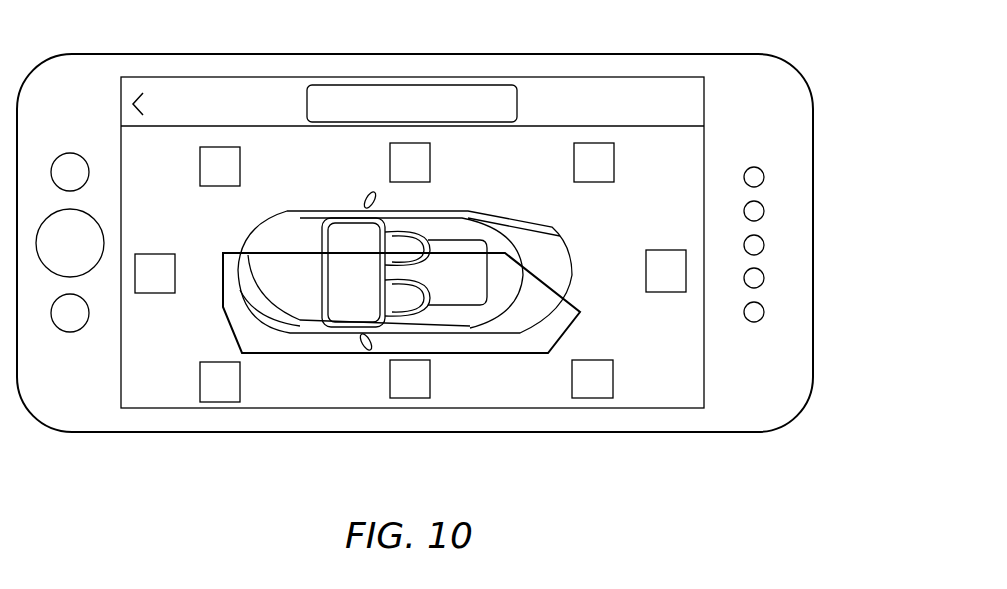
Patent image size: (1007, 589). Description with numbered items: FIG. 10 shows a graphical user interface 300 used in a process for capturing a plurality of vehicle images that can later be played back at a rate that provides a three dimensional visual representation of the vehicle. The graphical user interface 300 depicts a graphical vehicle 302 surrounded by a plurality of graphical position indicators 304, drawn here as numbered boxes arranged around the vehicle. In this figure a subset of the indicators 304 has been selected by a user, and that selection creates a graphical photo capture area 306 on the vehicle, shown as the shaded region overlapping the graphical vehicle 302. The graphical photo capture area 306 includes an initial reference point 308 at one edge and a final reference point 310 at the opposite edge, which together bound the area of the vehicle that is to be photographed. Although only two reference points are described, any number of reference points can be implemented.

The graphical user interface 300 is at (148, 368).
The graphical vehicle 302 is at (492, 332).
The graphical position indicators 304 is at (218, 402).
The graphical photo capture area 306 is at (287, 343).
The initial reference point 308 is at (222, 255).
The final reference point 310 is at (580, 312).